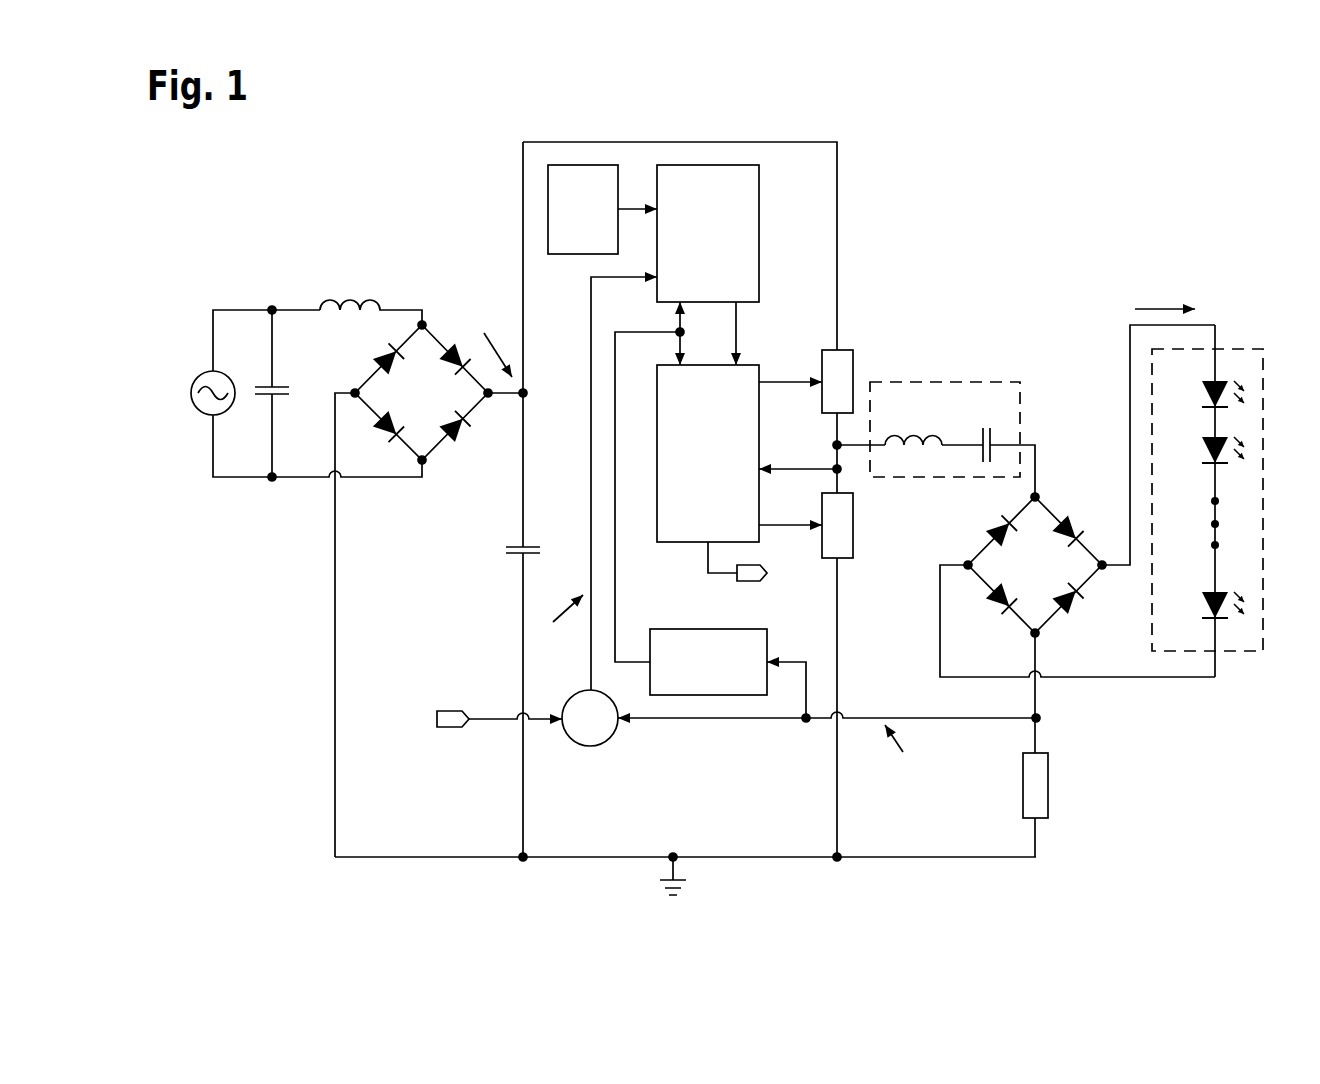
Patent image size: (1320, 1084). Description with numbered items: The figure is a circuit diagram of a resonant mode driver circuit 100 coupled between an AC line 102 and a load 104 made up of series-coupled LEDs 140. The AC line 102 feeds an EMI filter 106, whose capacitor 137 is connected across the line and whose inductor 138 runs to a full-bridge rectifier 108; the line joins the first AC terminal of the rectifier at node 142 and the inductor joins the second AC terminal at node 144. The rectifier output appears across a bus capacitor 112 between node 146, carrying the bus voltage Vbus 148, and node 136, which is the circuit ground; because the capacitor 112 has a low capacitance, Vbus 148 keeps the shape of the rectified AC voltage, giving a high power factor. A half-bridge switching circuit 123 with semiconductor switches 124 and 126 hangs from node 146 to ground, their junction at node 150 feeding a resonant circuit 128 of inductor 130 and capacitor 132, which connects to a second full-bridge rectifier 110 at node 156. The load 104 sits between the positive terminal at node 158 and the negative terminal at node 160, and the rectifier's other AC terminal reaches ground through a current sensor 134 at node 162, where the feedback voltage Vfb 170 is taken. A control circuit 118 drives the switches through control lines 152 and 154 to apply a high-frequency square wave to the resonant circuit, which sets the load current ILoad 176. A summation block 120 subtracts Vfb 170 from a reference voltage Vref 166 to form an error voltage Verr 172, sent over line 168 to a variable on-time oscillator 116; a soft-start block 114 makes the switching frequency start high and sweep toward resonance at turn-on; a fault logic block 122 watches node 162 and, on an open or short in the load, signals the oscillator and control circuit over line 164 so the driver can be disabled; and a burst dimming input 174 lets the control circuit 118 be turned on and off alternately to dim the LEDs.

The driver circuit 100 is at (1185, 137).
The AC line 102 is at (196, 372).
The load 104 is at (1230, 348).
The EMI filter 106 is at (276, 268).
The full-bridge rectifier 108 is at (422, 513).
The full-bridge rectifier 110 is at (983, 622).
The capacitor 112 is at (530, 544).
The soft-start block 114 is at (568, 255).
The variable on-time oscillator 116 is at (759, 230).
The control circuit 118 is at (708, 453).
The summation block 120 is at (612, 742).
The fault logic block 122 is at (768, 636).
The half-bridge switching circuit 123 is at (885, 553).
The semiconductor switch 124 is at (853, 357).
The semiconductor switch 126 is at (853, 523).
The resonant circuit 128 is at (966, 382).
The inductor 130 is at (898, 433).
The capacitor 132 is at (978, 432).
The current sensor 134 is at (1048, 786).
The node 136 is at (521, 857).
The capacitor 137 is at (278, 385).
The inductor 138 is at (350, 300).
The LEDs 140 is at (1203, 609).
The node 142 is at (428, 462).
The node 144 is at (424, 322).
The node 146 is at (525, 393).
The bus voltage (Vbus) 148 is at (507, 322).
The node 150 is at (833, 445).
The control line 152 is at (783, 378).
The control line 154 is at (784, 524).
The node 156 is at (1040, 496).
The node 158 is at (1106, 568).
The node 160 is at (966, 563).
The node 162 is at (1042, 720).
The line 164 is at (616, 537).
The reference voltage (Vref) 166 is at (444, 710).
The line 168 is at (591, 443).
The feedback voltage (Vfb) 170 is at (925, 772).
The error voltage (Verr) 172 is at (578, 645).
The burst dimming input 174 is at (768, 573).
The load current (ILoad) 176 is at (1134, 302).